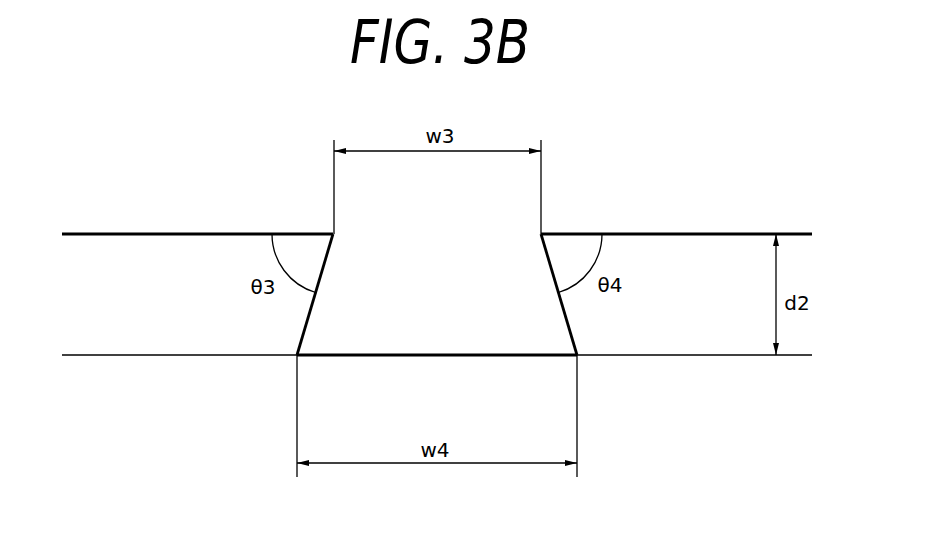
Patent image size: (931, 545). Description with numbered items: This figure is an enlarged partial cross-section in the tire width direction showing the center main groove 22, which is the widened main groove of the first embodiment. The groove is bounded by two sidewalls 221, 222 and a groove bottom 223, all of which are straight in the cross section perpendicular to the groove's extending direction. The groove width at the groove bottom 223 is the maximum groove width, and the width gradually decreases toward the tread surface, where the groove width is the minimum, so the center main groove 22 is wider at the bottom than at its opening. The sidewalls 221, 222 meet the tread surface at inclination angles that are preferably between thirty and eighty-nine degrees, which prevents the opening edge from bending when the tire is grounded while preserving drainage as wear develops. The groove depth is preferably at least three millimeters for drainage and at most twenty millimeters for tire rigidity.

The center main groove 22 is at (472, 261).
The sidewall 221 is at (316, 303).
The sidewall 222 is at (557, 303).
The groove bottom 223 is at (433, 355).